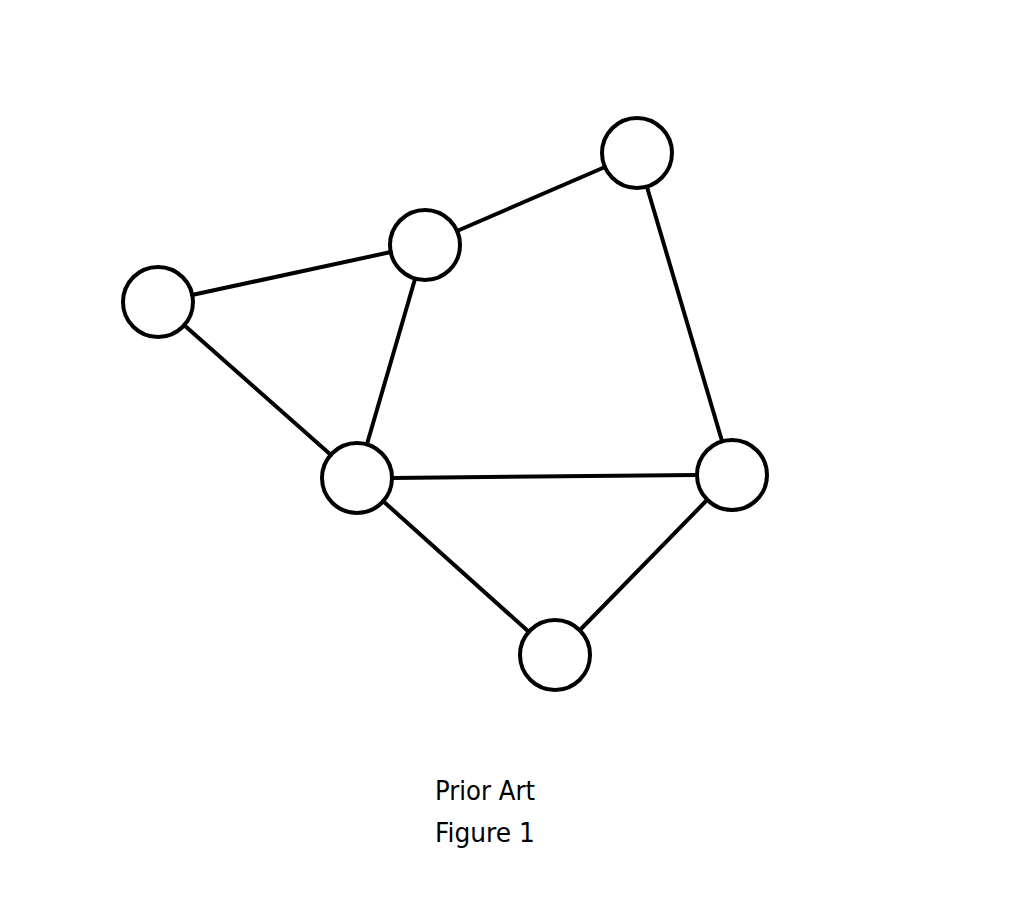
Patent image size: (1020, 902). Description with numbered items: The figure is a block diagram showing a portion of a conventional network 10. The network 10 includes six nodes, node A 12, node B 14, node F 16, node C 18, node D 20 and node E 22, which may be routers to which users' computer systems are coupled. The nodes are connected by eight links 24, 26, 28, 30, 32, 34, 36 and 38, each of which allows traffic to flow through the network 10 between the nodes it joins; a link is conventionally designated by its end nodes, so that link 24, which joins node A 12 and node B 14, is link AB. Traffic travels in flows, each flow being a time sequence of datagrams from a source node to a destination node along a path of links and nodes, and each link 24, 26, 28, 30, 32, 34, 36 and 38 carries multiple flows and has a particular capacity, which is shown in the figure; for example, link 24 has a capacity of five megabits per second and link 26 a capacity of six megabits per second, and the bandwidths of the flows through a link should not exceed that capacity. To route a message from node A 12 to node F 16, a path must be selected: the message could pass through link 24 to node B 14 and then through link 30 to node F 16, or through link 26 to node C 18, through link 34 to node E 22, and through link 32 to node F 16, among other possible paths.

The conventional network 10 is at (492, 43).
The node A 12 is at (553, 691).
The node B 14 is at (764, 458).
The node F 16 is at (637, 118).
The node C 18 is at (352, 513).
The node D 20 is at (125, 292).
The node E 22 is at (425, 210).
The link AB 24 is at (625, 595).
The link 26 is at (465, 587).
The link 28 is at (662, 477).
The link 30 is at (692, 330).
The link 32 is at (548, 190).
The link 34 is at (406, 328).
The link 36 is at (265, 393).
The link 38 is at (335, 262).